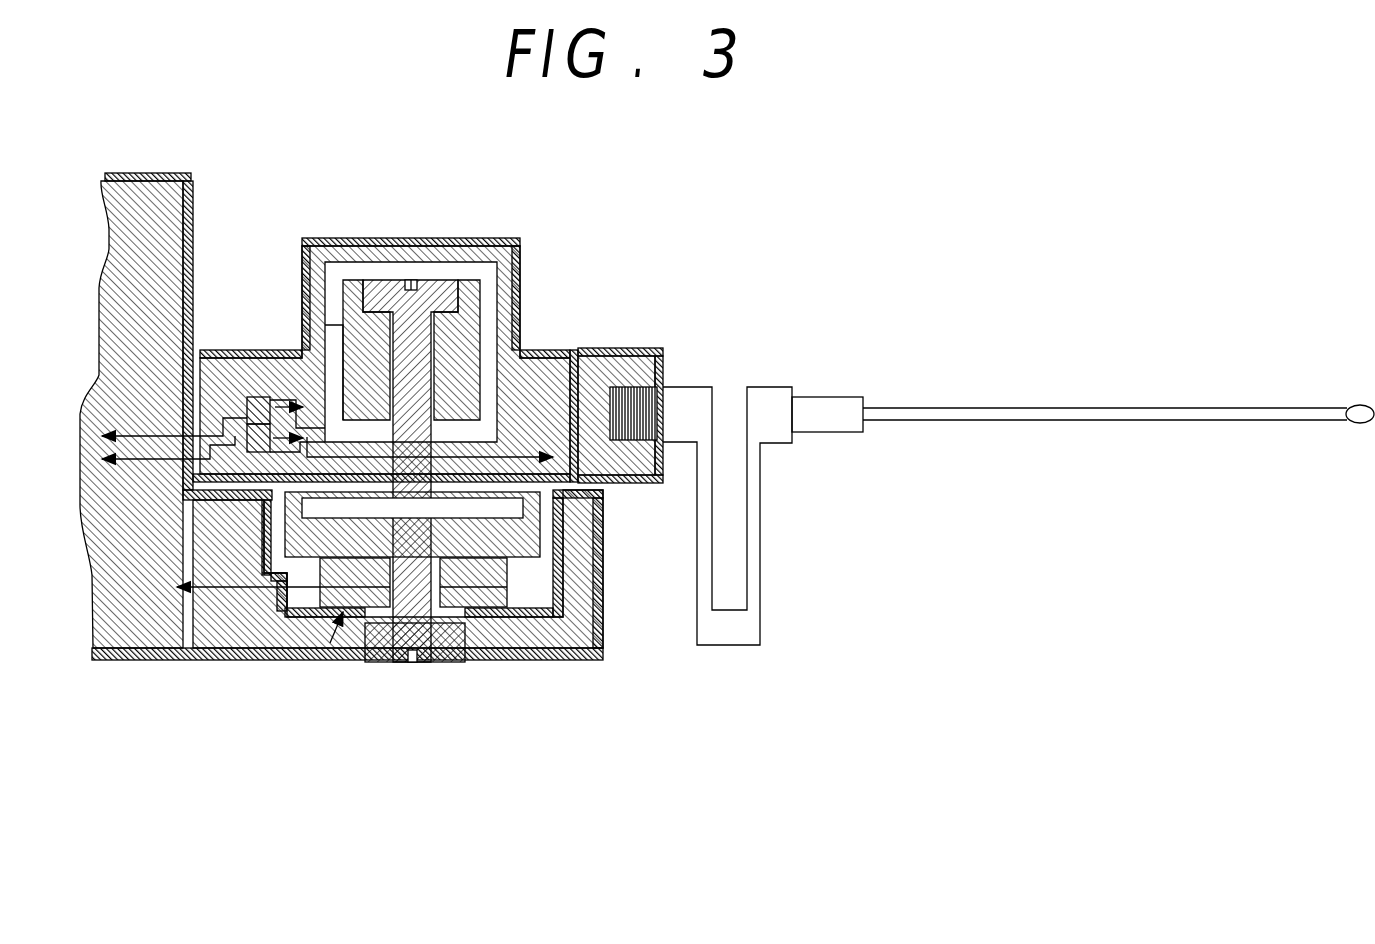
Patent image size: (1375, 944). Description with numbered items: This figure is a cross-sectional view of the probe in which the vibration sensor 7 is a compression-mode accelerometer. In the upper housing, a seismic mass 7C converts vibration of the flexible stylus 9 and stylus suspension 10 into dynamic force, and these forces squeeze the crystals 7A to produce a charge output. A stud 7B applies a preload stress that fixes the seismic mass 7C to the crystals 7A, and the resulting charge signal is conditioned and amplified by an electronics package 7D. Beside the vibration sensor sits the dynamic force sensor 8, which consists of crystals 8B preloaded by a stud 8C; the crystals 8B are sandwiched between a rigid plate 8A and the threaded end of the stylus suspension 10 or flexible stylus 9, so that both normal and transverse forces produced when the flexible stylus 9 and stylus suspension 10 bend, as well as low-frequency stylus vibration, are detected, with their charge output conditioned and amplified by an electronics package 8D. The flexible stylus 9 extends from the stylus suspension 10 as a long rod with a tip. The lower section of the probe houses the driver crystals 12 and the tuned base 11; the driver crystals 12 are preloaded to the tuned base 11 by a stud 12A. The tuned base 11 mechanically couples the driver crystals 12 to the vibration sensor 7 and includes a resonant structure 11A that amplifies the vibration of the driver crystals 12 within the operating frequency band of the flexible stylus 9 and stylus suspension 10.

The vibration sensor 7 is at (398, 187).
The crystals 7A is at (360, 410).
The stud 7B is at (425, 280).
The seismic mass 7C is at (480, 305).
The electronics package 7D is at (248, 397).
The dynamic force sensor 8 is at (705, 278).
The rigid plate 8A is at (575, 348).
The crystals 8B is at (613, 348).
The stud 8C is at (655, 395).
The electronics package 8D is at (240, 500).
The flexible stylus 9 is at (1180, 388).
The stylus suspension 10 is at (806, 550).
The tuned base 11 is at (523, 675).
The resonant structure 11A is at (498, 537).
The driver crystals 12 is at (325, 655).
The stud 12A is at (425, 662).